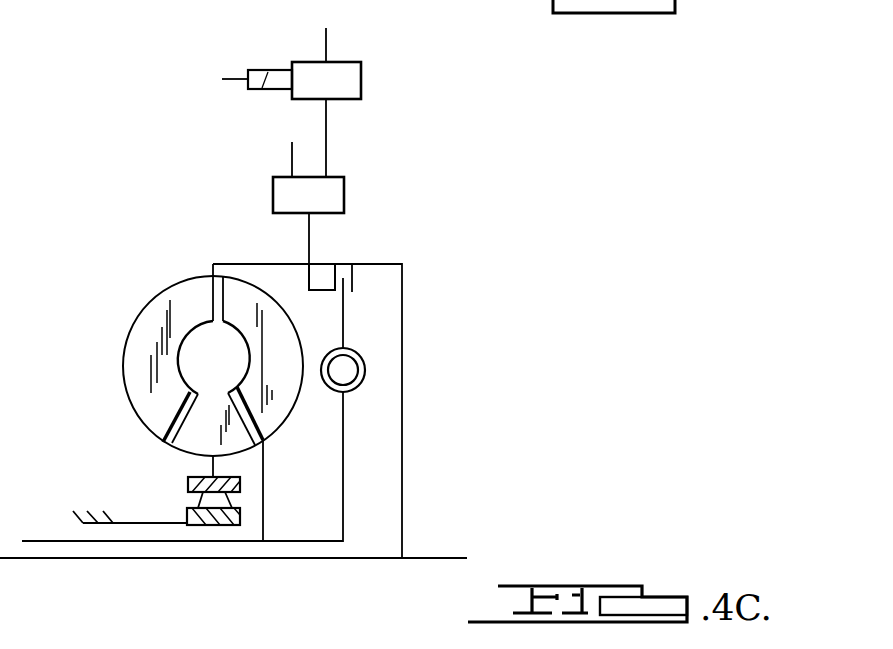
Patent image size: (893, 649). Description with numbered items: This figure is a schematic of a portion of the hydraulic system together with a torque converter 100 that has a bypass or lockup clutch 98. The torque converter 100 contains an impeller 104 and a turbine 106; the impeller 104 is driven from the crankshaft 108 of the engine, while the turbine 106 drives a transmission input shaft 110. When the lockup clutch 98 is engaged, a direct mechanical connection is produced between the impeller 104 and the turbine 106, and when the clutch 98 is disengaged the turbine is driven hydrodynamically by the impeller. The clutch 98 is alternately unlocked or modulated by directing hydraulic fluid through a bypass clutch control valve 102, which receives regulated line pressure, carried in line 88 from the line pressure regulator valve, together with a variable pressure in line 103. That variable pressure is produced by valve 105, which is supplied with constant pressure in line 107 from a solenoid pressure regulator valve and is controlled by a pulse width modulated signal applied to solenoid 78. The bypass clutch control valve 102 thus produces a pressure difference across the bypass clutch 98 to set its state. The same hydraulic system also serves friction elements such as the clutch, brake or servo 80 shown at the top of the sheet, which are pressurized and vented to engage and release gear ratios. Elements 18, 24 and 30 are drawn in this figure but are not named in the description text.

The inlet channel 18 is at (233, 262).
The fuel line 24 is at (343, 316).
The fuel injector 30 is at (365, 374).
The solenoid 78 is at (259, 70).
The friction element 80 is at (667, 13).
The line 88 is at (292, 151).
The lockup clutch 98 is at (352, 275).
The torque converter 100 is at (132, 294).
The bypass clutch control valve 102 is at (345, 192).
The line 103 is at (326, 120).
The impeller 104 is at (145, 398).
The valve 105 is at (348, 62).
The turbine 106 is at (273, 415).
The line 107 is at (326, 44).
The crankshaft 108 is at (435, 558).
The transmission input shaft 110 is at (79, 541).